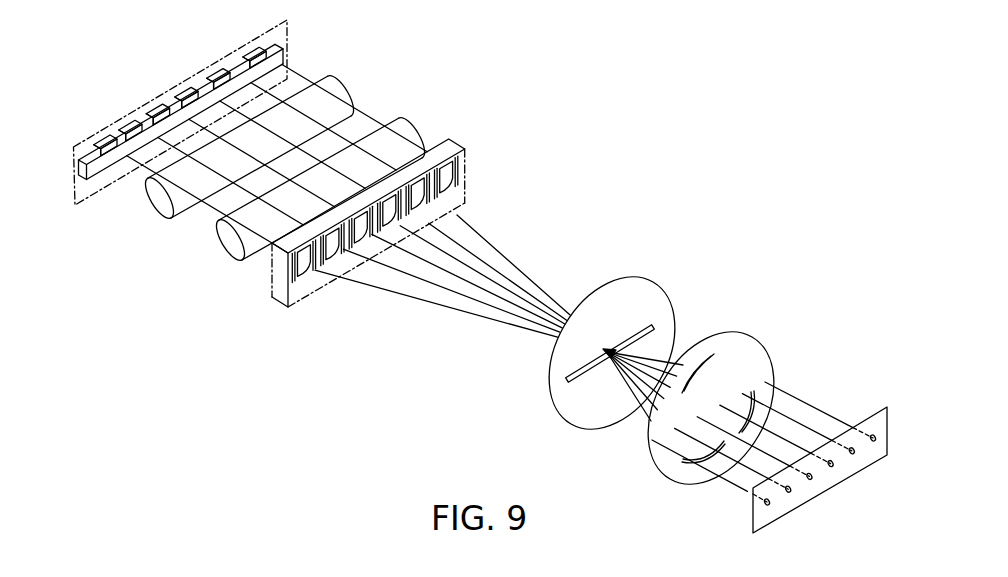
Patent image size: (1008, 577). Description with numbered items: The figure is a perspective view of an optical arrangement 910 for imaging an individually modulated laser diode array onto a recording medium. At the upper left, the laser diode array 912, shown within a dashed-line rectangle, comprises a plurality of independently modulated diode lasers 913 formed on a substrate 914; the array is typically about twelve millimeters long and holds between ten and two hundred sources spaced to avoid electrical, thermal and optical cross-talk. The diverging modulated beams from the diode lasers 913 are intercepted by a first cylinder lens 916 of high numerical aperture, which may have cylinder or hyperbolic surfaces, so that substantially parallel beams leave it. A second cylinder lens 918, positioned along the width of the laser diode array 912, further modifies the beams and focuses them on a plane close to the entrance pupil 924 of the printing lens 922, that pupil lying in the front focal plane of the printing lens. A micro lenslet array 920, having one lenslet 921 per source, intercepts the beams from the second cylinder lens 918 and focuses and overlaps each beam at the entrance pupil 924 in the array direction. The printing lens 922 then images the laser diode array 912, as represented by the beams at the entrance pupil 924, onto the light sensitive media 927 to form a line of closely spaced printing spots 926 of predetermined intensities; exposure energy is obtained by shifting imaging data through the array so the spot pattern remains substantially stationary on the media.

The optical arrangement 910 is at (625, 166).
The laser diode array 912 is at (84, 141).
The diode lasers 913 is at (106, 139).
The substrate 914 is at (285, 58).
The first cylinder lens 916 is at (343, 90).
The second cylinder lens 918 is at (416, 128).
The micro lenslet array 920 is at (466, 152).
The lenslet 921 is at (452, 180).
The printing lens 922 is at (750, 330).
The entrance pupil 924 is at (658, 289).
The printing spots 926 is at (810, 479).
The light sensitive media 927 is at (870, 420).